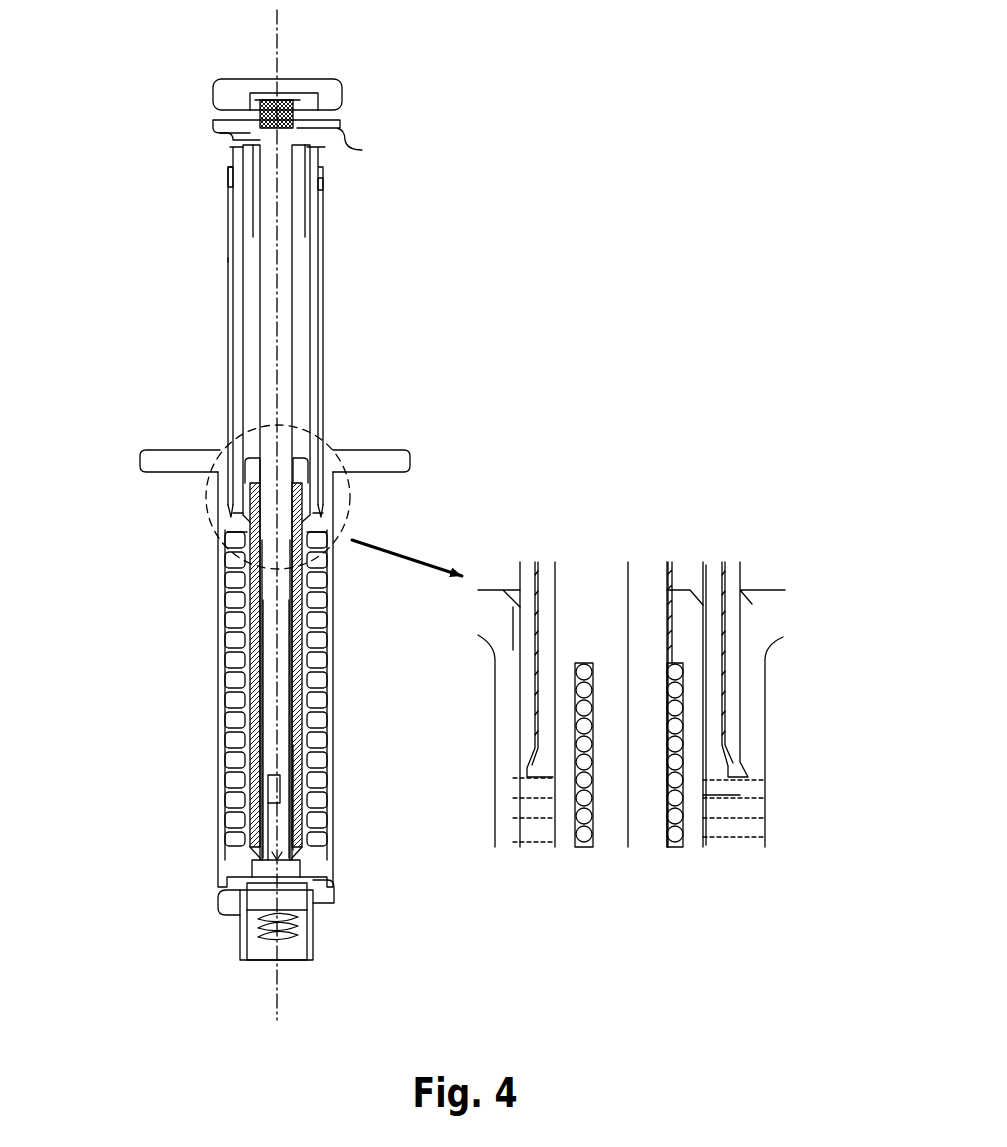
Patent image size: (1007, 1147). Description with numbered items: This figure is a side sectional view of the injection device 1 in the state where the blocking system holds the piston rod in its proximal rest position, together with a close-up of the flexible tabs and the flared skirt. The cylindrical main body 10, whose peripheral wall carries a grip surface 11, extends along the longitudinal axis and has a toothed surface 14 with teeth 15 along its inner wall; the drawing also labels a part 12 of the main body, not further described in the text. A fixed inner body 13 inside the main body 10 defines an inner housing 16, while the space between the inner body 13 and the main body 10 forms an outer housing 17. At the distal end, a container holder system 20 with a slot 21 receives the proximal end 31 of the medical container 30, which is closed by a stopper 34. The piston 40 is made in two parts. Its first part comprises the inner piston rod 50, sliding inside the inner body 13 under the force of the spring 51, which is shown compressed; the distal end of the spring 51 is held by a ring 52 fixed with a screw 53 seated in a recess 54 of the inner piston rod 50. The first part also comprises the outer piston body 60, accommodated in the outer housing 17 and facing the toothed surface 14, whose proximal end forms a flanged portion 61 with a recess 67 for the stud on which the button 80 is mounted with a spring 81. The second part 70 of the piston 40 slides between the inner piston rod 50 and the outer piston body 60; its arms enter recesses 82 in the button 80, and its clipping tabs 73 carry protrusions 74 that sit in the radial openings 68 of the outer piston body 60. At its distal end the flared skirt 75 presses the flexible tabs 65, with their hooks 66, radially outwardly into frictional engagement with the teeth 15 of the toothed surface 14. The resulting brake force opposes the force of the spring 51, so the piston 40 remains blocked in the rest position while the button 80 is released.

The injection device 1 is at (172, 332).
The main body 10 is at (218, 722).
The grip surface 11 is at (335, 652).
The flange 12 is at (403, 464).
The inner body 13 is at (297, 470).
The toothed surface 14 is at (227, 637).
The teeth 15 is at (706, 800).
The inner housing 16 is at (284, 601).
The outer housing 17 is at (313, 698).
The container holder system 20 is at (223, 892).
The slot 21 is at (326, 889).
The medical container 30 is at (240, 944).
The proximal end 31 is at (322, 890).
The stopper 34 is at (290, 950).
The piston 40 is at (330, 262).
The inner piston rod 50 is at (617, 820).
The spring 51 is at (300, 747).
The ring 52 is at (297, 862).
The screw 53 is at (257, 861).
The recess 54 is at (282, 792).
The outer piston body 60 is at (320, 367).
The flanged portion 61 is at (362, 150).
The flexible tabs 65 is at (321, 520).
The hooks 66 is at (760, 730).
The recess 67 is at (250, 133).
The radial openings 68 is at (323, 184).
The second part 70 is at (311, 327).
The clipping tabs 73 is at (246, 208).
The protrusion 74 is at (238, 172).
The flared skirt 75 is at (238, 528).
The button 80 is at (343, 87).
The spring 81 is at (294, 114).
The recesses 82 is at (262, 100).